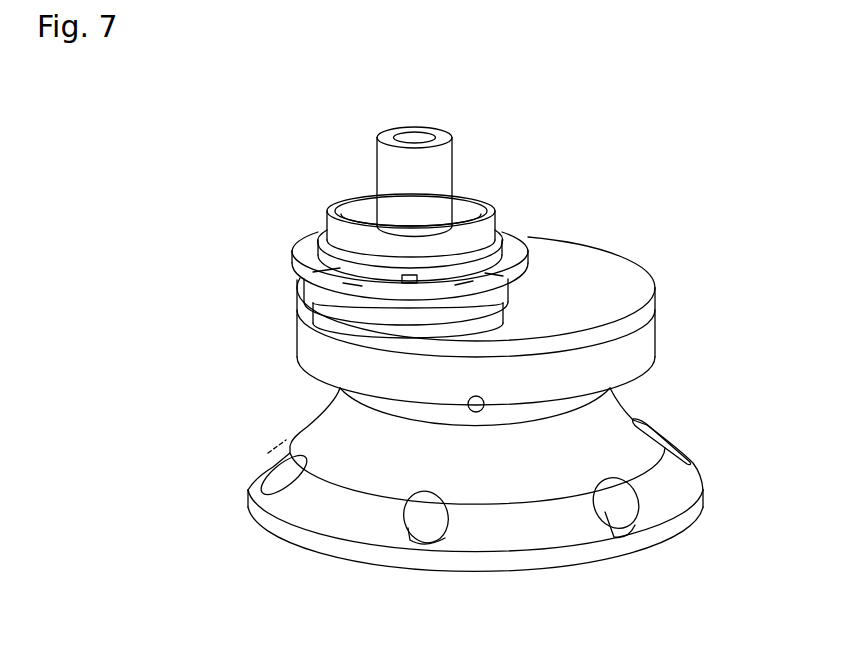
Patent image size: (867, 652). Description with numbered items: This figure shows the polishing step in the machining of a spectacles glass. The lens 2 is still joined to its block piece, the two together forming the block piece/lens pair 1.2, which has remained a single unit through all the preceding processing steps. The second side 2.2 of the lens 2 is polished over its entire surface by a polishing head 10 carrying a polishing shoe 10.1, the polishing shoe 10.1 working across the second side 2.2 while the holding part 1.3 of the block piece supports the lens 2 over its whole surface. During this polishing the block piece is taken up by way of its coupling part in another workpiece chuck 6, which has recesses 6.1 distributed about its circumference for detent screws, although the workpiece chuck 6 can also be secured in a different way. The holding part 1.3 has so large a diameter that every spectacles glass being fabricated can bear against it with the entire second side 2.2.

The polishing head 10 is at (430, 172).
The lens 2 is at (302, 307).
The second side 2.2 is at (557, 245).
The block piece/lens pair 1.2 is at (668, 265).
The polishing shoe 10.1 is at (337, 325).
The holding part 1.3 is at (340, 355).
The workpiece chuck 6 is at (327, 517).
The recesses 6.1 is at (410, 529).